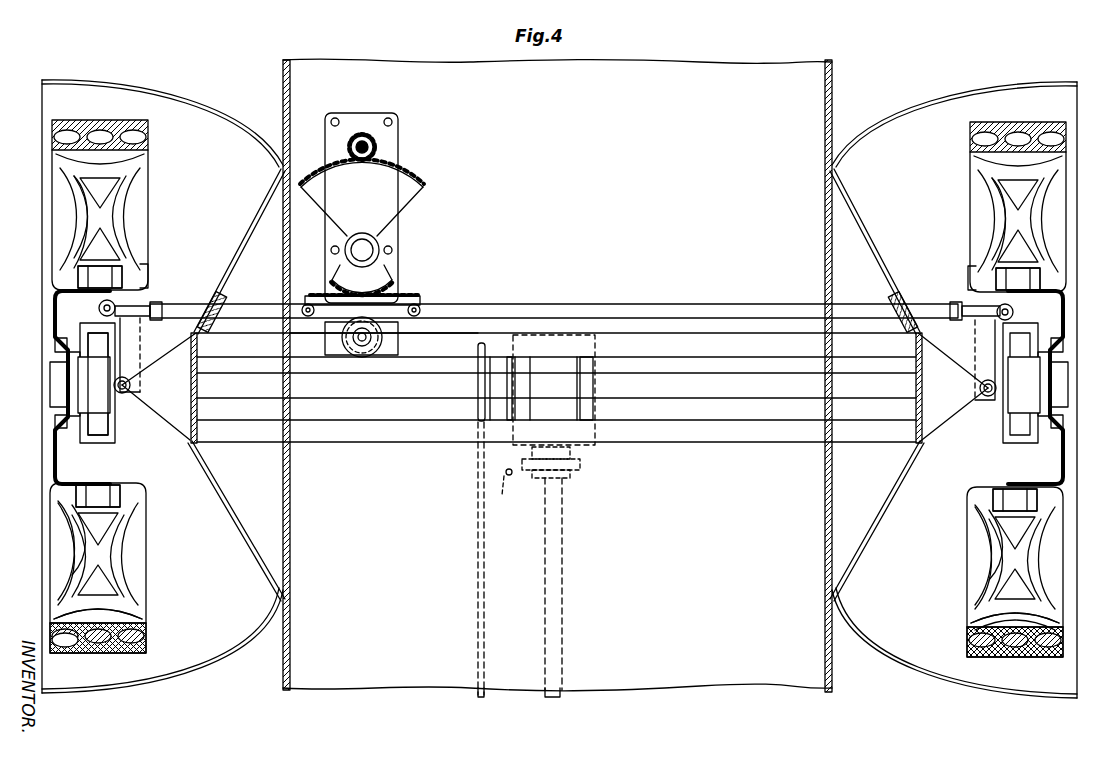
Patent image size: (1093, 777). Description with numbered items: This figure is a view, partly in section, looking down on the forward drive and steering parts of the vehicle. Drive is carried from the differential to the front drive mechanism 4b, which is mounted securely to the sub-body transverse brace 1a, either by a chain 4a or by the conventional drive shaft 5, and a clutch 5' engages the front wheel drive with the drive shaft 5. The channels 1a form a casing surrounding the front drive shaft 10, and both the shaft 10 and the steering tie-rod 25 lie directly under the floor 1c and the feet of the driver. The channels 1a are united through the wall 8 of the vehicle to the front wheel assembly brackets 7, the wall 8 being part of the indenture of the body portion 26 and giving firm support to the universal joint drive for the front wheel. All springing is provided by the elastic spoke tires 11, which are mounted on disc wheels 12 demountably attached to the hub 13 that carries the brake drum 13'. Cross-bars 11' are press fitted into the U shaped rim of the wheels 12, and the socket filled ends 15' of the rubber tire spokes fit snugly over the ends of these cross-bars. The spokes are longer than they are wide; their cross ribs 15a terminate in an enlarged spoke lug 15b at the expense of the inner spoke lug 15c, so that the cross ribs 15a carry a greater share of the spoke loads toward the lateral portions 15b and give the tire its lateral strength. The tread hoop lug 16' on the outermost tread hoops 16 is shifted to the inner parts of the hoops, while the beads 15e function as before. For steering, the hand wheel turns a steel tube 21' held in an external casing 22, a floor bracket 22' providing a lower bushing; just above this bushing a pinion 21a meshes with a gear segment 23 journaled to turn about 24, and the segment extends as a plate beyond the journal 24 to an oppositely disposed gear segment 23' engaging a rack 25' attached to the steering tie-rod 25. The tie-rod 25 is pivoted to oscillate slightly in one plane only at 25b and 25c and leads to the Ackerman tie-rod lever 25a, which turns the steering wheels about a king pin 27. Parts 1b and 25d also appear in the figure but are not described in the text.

The sub-body transverse brace 1a is at (700, 336).
The frame side wall 1b is at (292, 512).
The floor 1c is at (686, 680).
The chain 4a is at (478, 528).
The front drive mechanism 4b is at (558, 375).
The drive shaft 5 is at (567, 595).
The clutch 5' is at (558, 471).
The front wheel assembly bracket 7 is at (172, 420).
The wall 8 is at (197, 388).
The front drive shaft 10 is at (480, 380).
The elastic spoke tire 11 is at (535, 386).
The cross-bar 11' is at (558, 382).
The disc wheel 12 is at (55, 462).
The hub 13 is at (536, 368).
The brake drum 13' is at (98, 403).
The cross rib 15a is at (122, 262).
The spoke lug 15b is at (135, 608).
The inner spoke lug 15c is at (78, 658).
The bead 15e is at (122, 553).
The socket filled spoke end 15' is at (558, 283).
The outermost tread hoop 16 is at (556, 651).
The tread hoop lug 16' is at (992, 632).
The pinion 21a is at (357, 135).
The steering tube 21' is at (382, 116).
The external casing 22 is at (390, 149).
The floor bracket 22' is at (381, 208).
The gear segment 23 is at (371, 197).
The oppositely disposed gear segment 23' is at (383, 274).
The journal 24 is at (372, 250).
The steering tie-rod 25 is at (556, 296).
The rack 25' is at (371, 293).
The Ackerman tie-rod lever 25a is at (140, 336).
The tie-rod pivot 25b is at (430, 305).
The tie-rod pivot 25c is at (302, 298).
The guide bracket 25d is at (222, 299).
The indented body portion 26 is at (176, 91).
The king pin 27 is at (130, 385).